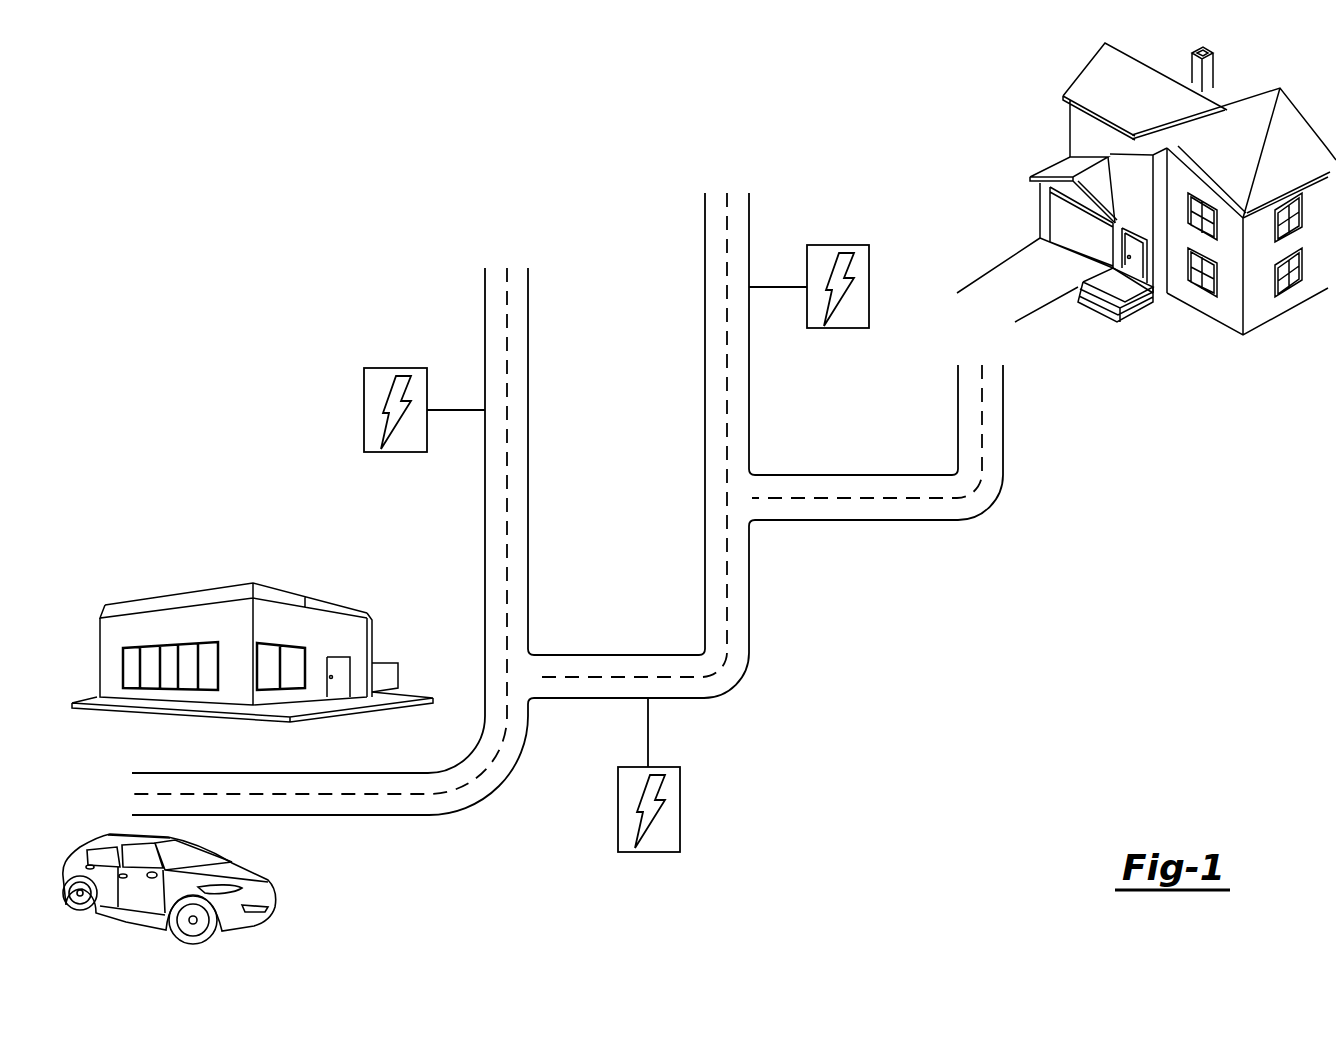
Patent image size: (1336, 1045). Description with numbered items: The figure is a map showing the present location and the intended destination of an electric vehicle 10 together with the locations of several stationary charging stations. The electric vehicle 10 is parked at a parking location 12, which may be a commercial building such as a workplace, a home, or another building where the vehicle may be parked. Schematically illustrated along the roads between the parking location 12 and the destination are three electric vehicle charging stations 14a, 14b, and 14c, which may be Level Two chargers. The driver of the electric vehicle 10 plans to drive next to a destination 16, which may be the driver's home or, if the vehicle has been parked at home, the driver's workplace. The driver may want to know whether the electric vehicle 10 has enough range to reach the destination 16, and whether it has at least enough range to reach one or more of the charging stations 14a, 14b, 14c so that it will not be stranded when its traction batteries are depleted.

The electric vehicle 10 is at (278, 903).
The parking location 12 is at (187, 590).
The electric vehicle charging station 14a is at (396, 367).
The electric vehicle charging station 14b is at (680, 810).
The electric vehicle charging station 14c is at (839, 244).
The destination 16 is at (1090, 77).